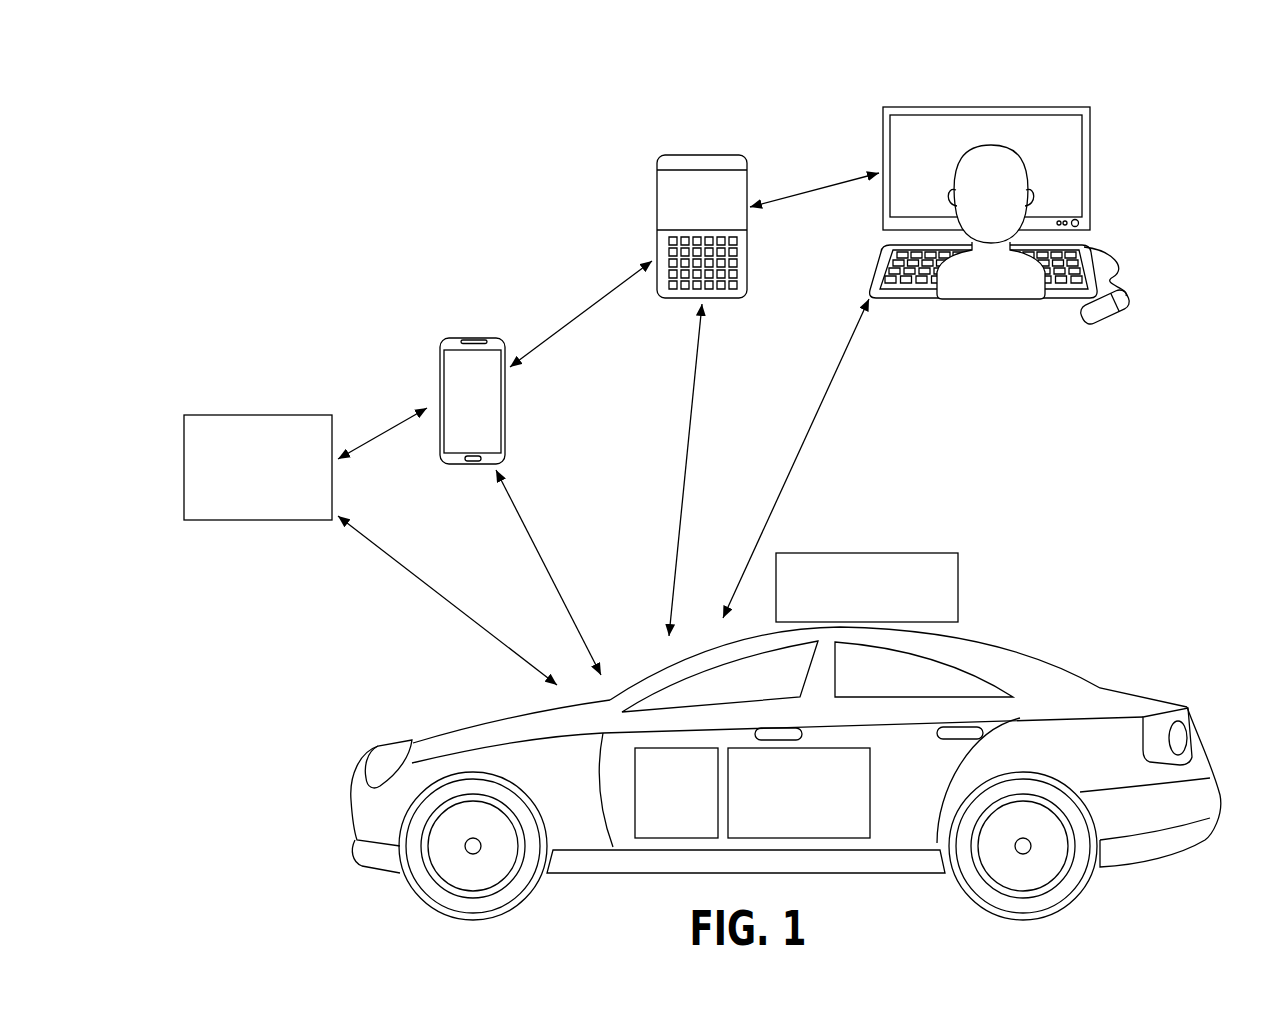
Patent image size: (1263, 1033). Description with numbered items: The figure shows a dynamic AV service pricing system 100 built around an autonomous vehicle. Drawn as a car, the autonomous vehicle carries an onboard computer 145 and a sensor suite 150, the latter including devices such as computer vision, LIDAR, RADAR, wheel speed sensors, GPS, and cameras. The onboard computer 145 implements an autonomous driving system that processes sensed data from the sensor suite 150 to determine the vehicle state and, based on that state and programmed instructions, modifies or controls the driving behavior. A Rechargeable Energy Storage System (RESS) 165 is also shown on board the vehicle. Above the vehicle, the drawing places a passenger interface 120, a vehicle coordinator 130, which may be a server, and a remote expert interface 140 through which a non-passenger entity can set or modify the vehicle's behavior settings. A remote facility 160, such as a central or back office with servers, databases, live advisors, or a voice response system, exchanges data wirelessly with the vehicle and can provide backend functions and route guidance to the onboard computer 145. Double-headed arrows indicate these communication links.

The dynamic AV service pricing system 100 is at (1185, 108).
The passenger interface 120 is at (460, 338).
The vehicle coordinator 130 is at (685, 155).
The remote expert interface 140 is at (915, 107).
The onboard computer 145 is at (783, 831).
The sensor suite 150 is at (850, 613).
The remote facility 160 is at (241, 504).
The rechargeable energy storage system (RESS) 165 is at (660, 822).